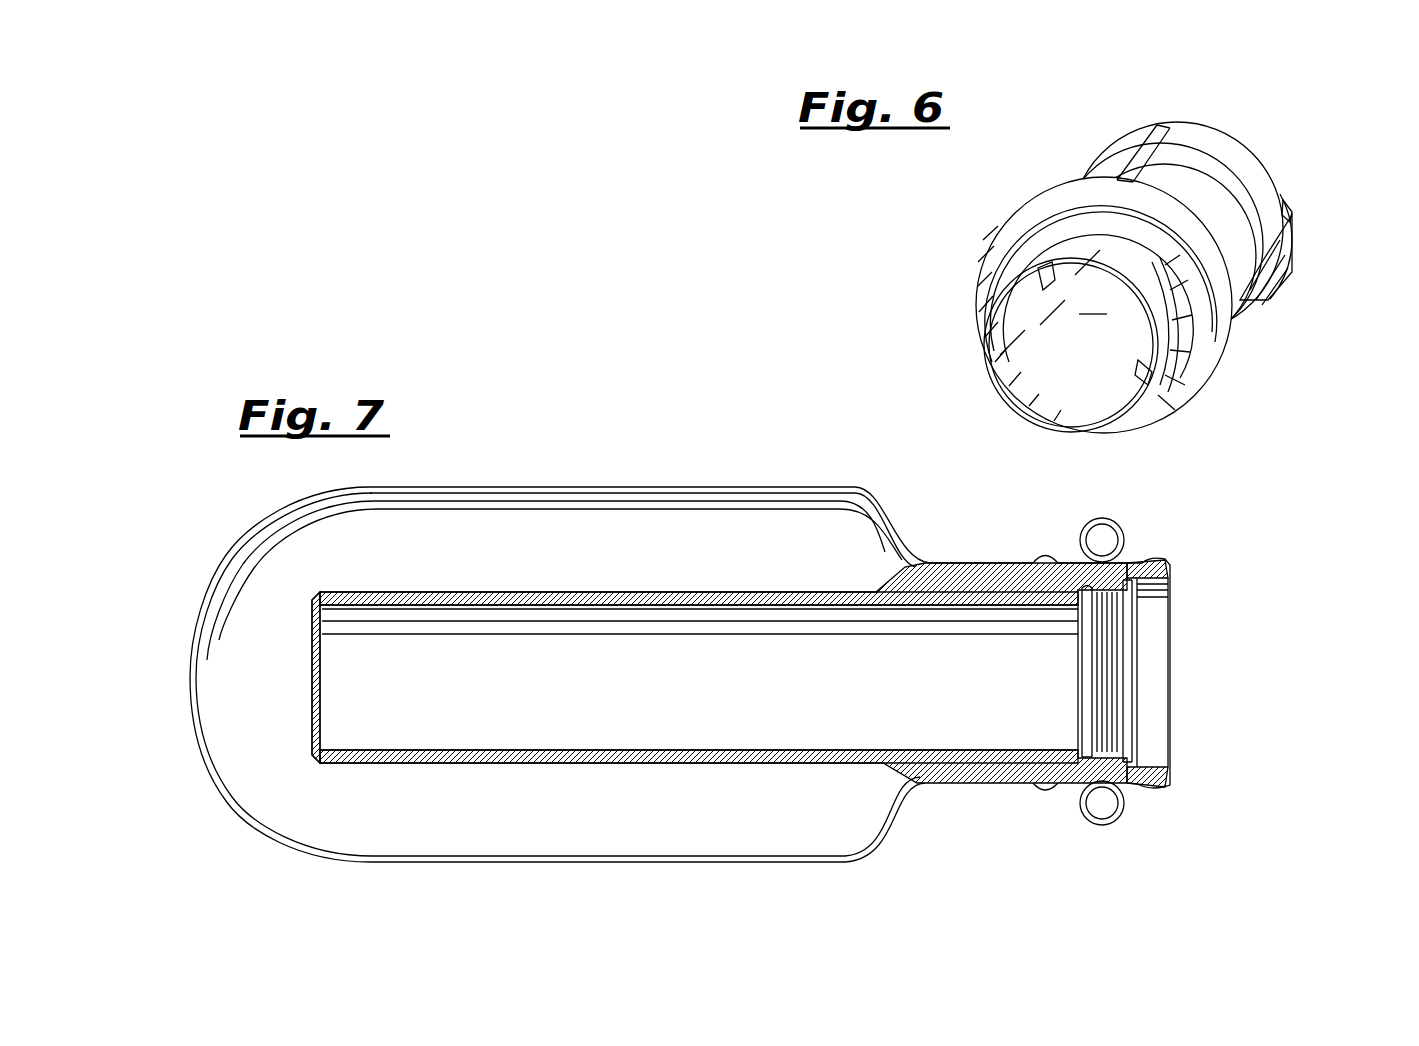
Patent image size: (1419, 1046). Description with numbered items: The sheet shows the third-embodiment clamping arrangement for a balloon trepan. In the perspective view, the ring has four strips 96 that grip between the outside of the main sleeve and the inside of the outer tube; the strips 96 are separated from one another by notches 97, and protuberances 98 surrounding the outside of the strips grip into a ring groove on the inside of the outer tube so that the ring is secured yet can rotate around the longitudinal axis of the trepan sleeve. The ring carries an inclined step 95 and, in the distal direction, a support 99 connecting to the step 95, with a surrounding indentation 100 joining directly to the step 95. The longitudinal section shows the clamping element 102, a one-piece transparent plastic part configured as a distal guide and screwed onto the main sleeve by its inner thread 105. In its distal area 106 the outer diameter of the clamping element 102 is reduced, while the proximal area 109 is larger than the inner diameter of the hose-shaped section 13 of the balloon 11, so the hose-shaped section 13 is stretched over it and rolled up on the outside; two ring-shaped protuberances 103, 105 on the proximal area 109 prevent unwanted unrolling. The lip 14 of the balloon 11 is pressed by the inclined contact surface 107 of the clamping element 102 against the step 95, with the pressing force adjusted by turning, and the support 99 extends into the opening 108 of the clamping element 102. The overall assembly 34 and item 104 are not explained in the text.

In FIG. 6, the cap assembly 34 is at (1103, 105).
In FIG. 6, the step 95 is at (1030, 212).
In FIG. 6, the strips 96 is at (1222, 165).
In FIG. 6, the notches 97 is at (1152, 120).
In FIG. 6, the protuberances 98 is at (1090, 163).
In FIG. 6, the support 99 is at (1168, 320).
In FIG. 6, the surrounding indentation 100 is at (1178, 345).
In FIG. 7, the balloon 11 is at (568, 486).
In FIG. 7, the hose-shaped section 13 is at (978, 562).
In FIG. 7, the lip 14 is at (1100, 518).
In FIG. 7, the clamping element 102 is at (638, 768).
In FIG. 7, the ring-shaped protuberance 103 is at (1041, 788).
In FIG. 7, the lip 104 is at (1158, 790).
In FIG. 7, the inner thread 105 is at (1112, 598).
In FIG. 7, the distal area 106 is at (728, 765).
In FIG. 7, the contact surface 107 is at (1172, 768).
In FIG. 7, the opening 108 is at (1148, 752).
In FIG. 7, the proximal area 109 is at (1063, 800).